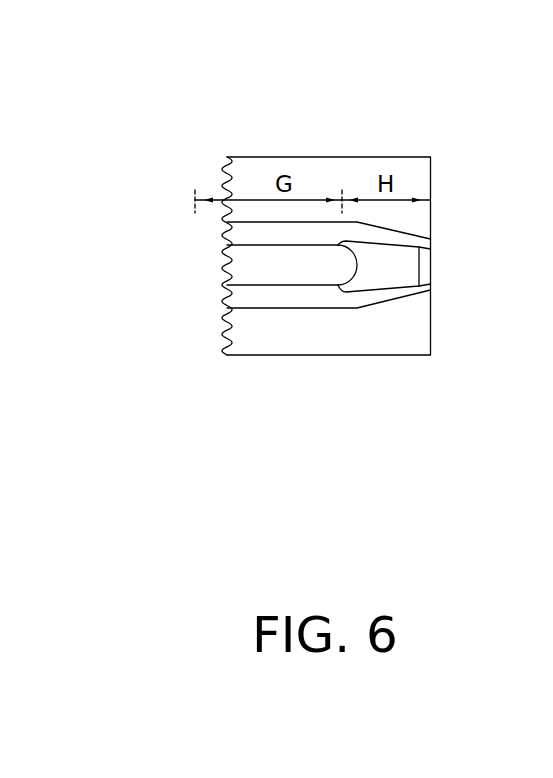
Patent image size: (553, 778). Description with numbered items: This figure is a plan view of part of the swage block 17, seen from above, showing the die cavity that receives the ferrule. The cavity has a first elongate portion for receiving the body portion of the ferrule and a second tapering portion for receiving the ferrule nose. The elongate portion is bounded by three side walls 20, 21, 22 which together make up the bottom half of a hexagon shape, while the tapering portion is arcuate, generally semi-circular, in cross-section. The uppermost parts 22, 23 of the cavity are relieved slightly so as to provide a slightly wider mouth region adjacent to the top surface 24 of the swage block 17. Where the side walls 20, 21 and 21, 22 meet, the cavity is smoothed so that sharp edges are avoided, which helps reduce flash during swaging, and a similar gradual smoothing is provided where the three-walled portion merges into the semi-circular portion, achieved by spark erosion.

The swage block 17 is at (401, 167).
The side wall 20 is at (268, 233).
The side wall 21 is at (268, 265).
The side wall 22 is at (405, 239).
The uppermost part 23 is at (398, 298).
The top surface 24 is at (365, 335).